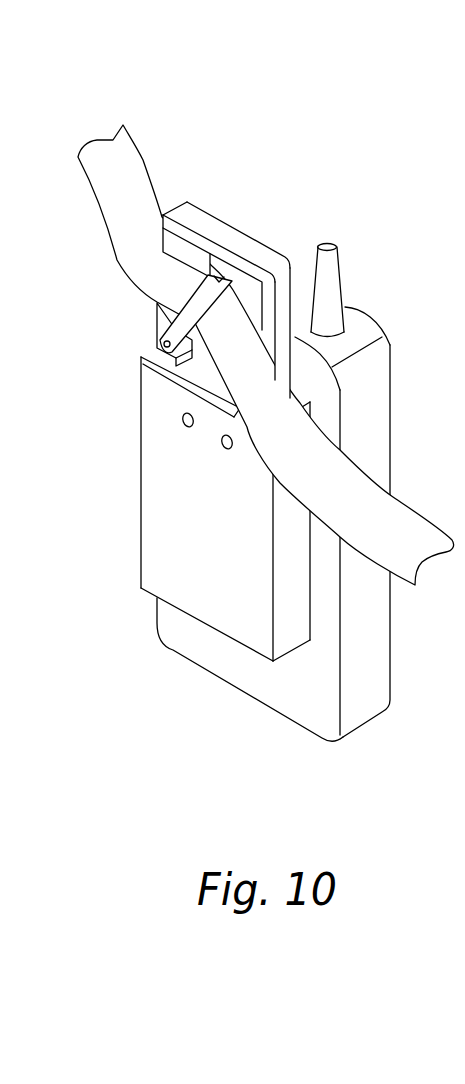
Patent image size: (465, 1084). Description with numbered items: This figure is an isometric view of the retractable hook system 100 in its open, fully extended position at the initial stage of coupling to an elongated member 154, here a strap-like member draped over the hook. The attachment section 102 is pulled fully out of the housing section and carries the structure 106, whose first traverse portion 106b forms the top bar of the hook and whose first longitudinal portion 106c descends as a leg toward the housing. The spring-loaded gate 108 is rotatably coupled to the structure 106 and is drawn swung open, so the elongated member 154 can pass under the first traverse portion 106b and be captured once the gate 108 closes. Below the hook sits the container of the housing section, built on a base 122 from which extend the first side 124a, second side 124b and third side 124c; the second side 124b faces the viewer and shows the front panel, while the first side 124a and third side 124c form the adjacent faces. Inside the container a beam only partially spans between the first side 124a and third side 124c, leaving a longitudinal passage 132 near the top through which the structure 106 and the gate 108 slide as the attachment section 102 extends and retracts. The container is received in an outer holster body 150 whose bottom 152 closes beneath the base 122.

The retractable hook system 100 is at (100, 472).
The attachment section 102 is at (115, 303).
The structure 106 is at (203, 220).
The first traverse portion 106b is at (238, 237).
The first longitudinal portion 106c is at (295, 297).
The spring-loaded gate 108 is at (177, 325).
The base 122 is at (207, 628).
The first side 124a is at (312, 562).
The second side 124b is at (167, 570).
The third side 124c is at (293, 617).
The longitudinal passage 132 is at (143, 360).
The holster body 150 is at (400, 240).
The holster bottom 152 is at (273, 713).
The strap 154 is at (132, 163).